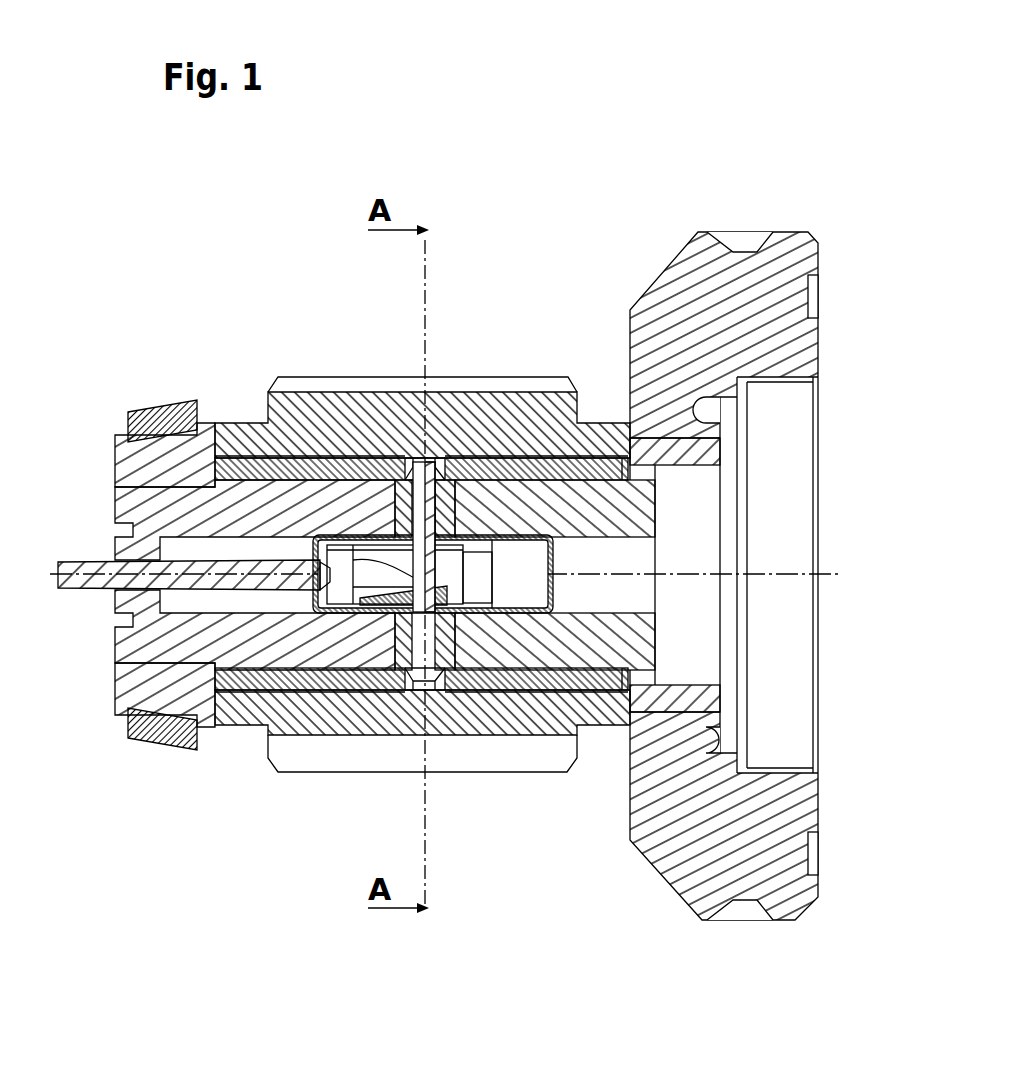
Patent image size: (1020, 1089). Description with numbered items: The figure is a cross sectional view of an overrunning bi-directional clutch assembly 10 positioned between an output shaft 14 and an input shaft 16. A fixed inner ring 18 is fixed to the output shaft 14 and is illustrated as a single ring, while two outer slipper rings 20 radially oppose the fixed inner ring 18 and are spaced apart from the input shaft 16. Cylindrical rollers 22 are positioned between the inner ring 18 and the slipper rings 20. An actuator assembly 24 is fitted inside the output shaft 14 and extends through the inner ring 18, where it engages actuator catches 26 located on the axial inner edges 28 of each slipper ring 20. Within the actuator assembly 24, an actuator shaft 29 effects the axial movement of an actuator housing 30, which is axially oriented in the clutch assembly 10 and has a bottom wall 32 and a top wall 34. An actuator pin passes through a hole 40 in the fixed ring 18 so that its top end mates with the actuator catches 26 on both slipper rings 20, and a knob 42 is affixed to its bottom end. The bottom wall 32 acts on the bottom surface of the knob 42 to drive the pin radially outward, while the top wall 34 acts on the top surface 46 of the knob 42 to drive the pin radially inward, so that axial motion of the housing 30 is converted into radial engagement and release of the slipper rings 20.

The clutch assembly 10 is at (437, 166).
The output shaft 14 is at (792, 803).
The input shaft 16 is at (268, 378).
The fixed inner ring 18 is at (255, 658).
The outer slipper rings 20 is at (240, 447).
The rollers 22 is at (318, 452).
The actuator assembly 24 is at (385, 504).
The actuator catches 26 is at (422, 462).
The axial inner edges 28 is at (436, 465).
The actuator shaft 29 is at (213, 606).
The actuator housing 30 is at (318, 616).
The bottom wall 32 is at (477, 615).
The top wall 34 is at (398, 562).
The hole 40 is at (446, 478).
The knob 42 is at (441, 606).
The top surface 46 is at (427, 616).